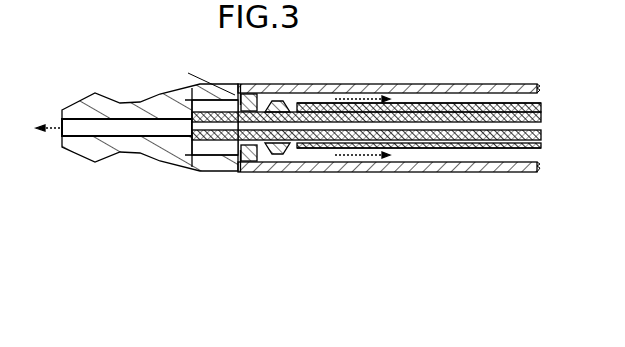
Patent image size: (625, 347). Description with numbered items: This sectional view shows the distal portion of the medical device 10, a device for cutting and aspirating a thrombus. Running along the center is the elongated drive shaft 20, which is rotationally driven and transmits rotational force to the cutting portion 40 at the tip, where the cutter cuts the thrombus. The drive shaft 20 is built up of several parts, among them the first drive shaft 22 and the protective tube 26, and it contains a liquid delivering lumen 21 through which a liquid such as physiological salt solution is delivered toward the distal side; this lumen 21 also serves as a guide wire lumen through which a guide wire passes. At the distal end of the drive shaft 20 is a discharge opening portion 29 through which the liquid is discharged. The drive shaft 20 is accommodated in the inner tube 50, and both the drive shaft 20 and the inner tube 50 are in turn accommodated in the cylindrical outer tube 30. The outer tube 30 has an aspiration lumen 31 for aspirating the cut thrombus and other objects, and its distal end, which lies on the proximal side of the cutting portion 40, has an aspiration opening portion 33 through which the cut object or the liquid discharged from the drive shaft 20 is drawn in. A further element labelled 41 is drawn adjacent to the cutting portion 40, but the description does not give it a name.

The medical device 10 is at (82, 59).
The cutting portion 40 is at (158, 93).
The nozzle bore 41 is at (138, 102).
The discharge opening portion 29 is at (199, 165).
The outer tube 30 is at (342, 84).
The aspiration opening portion 33 is at (258, 171).
The drive shaft 20 is at (410, 103).
The aspiration lumen 31 is at (507, 103).
The liquid delivering lumen 21 is at (472, 120).
The first drive shaft 22 is at (414, 135).
The protective tube 26 is at (463, 148).
The inner tube 50 is at (507, 149).